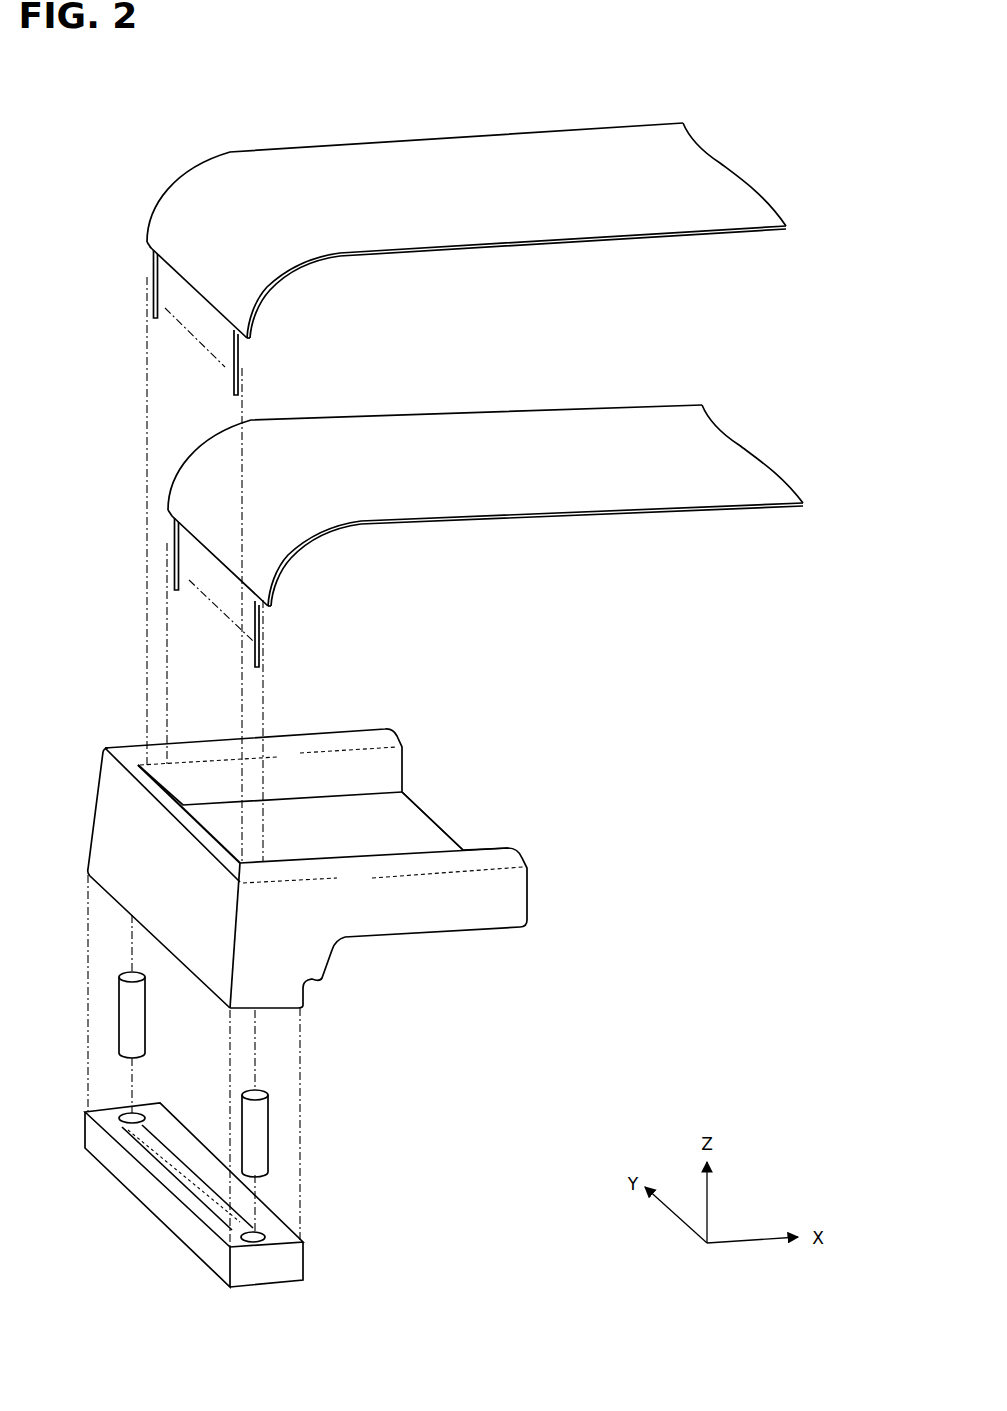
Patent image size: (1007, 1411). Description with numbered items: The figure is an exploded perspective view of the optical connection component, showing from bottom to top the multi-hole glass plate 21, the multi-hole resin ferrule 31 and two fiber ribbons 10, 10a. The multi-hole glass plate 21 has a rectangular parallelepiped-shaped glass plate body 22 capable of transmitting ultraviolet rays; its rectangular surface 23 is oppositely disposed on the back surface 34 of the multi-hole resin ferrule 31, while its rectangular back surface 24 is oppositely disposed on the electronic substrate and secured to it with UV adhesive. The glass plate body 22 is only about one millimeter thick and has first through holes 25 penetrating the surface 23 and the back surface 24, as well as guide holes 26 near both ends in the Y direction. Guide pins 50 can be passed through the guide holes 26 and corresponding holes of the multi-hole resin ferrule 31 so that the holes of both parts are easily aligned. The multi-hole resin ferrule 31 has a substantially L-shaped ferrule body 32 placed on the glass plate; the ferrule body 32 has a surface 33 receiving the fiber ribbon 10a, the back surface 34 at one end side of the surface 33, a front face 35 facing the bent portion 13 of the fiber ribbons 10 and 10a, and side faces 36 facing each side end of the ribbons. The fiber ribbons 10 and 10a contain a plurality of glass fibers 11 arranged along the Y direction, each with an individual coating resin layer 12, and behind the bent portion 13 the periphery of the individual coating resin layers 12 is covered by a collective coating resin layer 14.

The fiber ribbon 10 is at (433, 323).
The fiber ribbon 10a is at (622, 407).
The glass fibers 11 is at (155, 311).
The individual coating resin layers 12 is at (154, 253).
The bent portion 13 is at (205, 190).
The collective coating resin layer 14 is at (511, 147).
The multi-hole glass plate 21 is at (196, 1196).
The glass plate body 22 is at (115, 1170).
The surface 23 is at (270, 1217).
The back surface 24 is at (180, 1228).
The first through holes 25 is at (188, 1162).
The guide holes 26 is at (130, 1117).
The multi-hole resin ferrule 31 is at (307, 850).
The ferrule body 32 is at (349, 941).
The surface 33 is at (418, 823).
The back surface 34 is at (120, 895).
The front face 35 is at (117, 800).
The side faces 36 is at (350, 740).
The guide pins 50 is at (120, 1003).